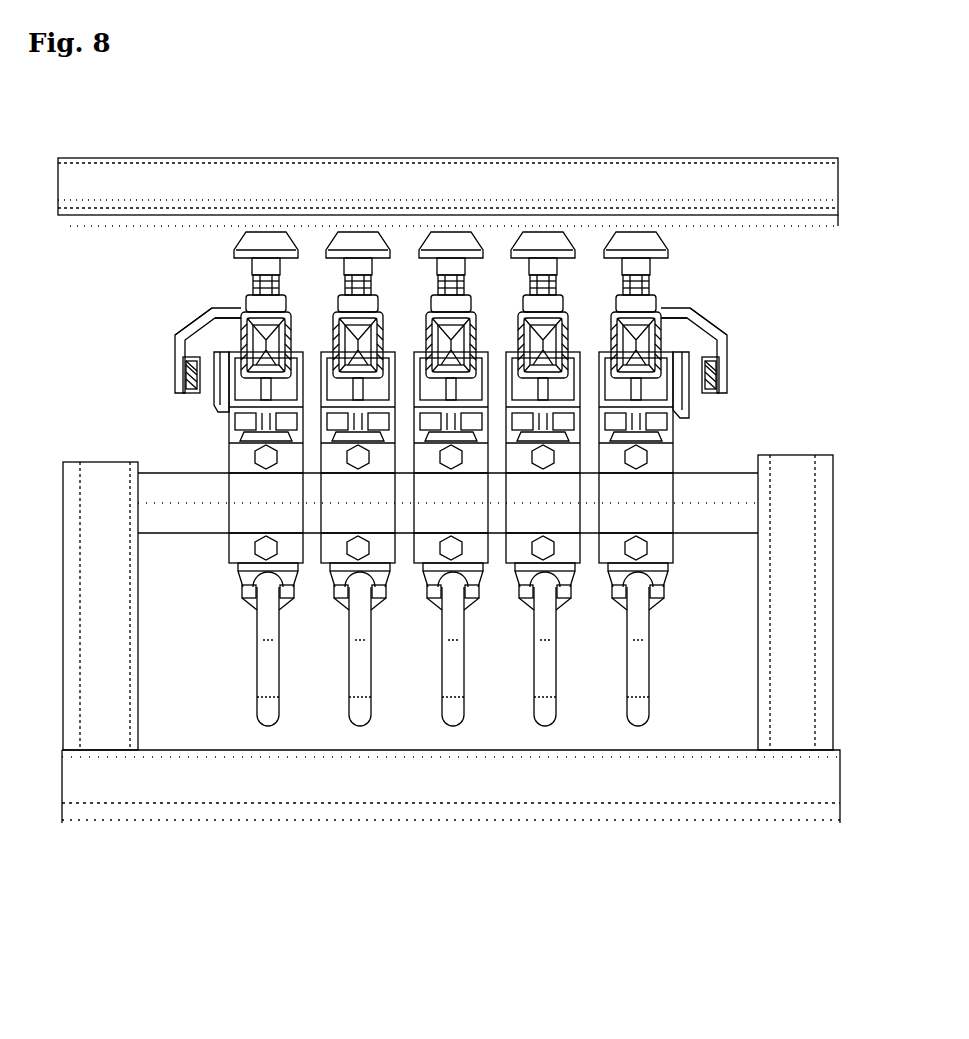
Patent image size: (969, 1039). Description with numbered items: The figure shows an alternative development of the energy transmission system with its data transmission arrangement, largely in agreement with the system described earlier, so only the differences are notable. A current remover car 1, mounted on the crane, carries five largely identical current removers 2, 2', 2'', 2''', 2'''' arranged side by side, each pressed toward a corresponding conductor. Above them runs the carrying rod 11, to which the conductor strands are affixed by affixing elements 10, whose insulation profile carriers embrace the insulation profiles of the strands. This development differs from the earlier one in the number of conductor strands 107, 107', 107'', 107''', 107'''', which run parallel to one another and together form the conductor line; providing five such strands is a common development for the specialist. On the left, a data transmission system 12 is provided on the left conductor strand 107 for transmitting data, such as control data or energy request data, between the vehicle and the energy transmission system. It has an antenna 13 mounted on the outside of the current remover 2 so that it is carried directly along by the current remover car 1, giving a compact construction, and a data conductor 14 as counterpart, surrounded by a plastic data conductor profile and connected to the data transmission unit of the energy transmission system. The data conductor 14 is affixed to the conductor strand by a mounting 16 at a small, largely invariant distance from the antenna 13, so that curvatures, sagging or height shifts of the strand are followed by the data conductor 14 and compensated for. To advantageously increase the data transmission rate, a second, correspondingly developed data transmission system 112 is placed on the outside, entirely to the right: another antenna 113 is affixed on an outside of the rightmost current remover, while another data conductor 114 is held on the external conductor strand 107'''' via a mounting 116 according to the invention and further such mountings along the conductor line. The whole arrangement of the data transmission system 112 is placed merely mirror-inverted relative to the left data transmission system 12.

The current remover car 1 is at (267, 817).
The current remover 2 is at (230, 479).
The current remover 2' is at (363, 479).
The current remover 2'' is at (458, 479).
The current remover 2''' is at (553, 479).
The current remover 2'''' is at (653, 479).
The affixing element 10 is at (240, 247).
The carrying rod 11 is at (177, 157).
The data transmission system 12 is at (161, 336).
The antenna 13 is at (214, 410).
The data conductor 14 is at (180, 378).
The mounting 16 is at (170, 334).
The conductor strand 107 is at (281, 324).
The conductor strand 107' is at (377, 324).
The conductor strand 107'' is at (472, 324).
The conductor strand 107''' is at (566, 324).
The conductor strand 107'''' is at (666, 313).
The data transmission system 112 is at (737, 334).
The antenna 113 is at (690, 410).
The data conductor 114 is at (722, 374).
The mounting 116 is at (733, 330).